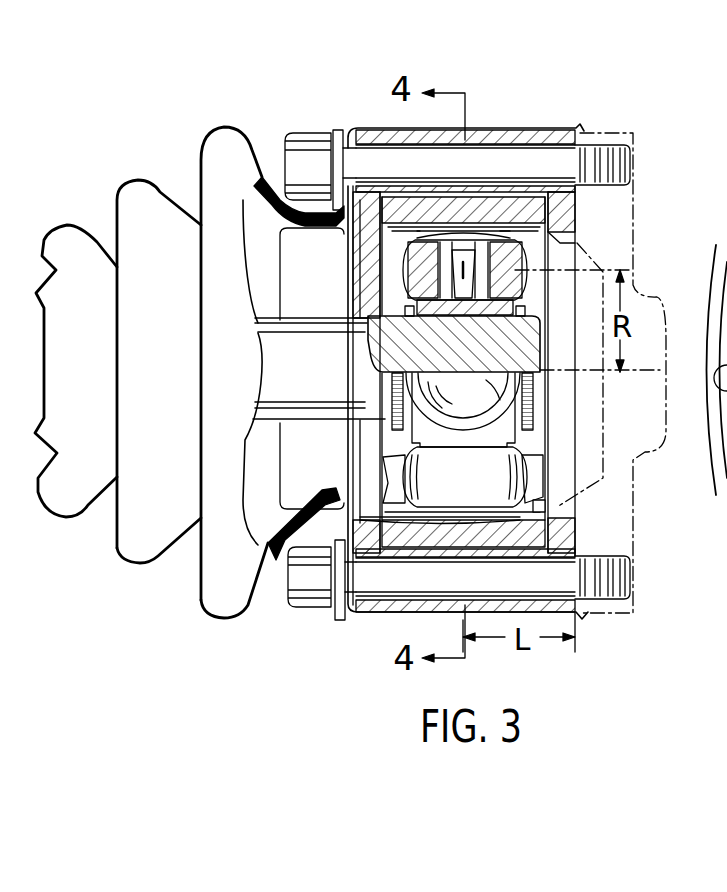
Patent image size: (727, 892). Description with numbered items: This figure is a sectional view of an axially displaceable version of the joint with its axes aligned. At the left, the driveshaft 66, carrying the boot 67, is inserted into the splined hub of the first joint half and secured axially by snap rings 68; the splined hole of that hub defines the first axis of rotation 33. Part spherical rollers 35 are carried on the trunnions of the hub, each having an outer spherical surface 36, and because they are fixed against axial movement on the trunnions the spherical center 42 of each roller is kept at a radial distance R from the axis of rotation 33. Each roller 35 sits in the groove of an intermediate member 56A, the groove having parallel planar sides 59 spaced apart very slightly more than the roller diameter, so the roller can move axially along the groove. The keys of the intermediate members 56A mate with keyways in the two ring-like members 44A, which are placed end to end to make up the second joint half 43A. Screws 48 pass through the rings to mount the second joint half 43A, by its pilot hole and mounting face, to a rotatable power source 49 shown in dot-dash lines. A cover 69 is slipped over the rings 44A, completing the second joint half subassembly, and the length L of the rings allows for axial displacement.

The driveshaft 66 is at (270, 318).
The boot 67 is at (232, 127).
The screws 48 is at (300, 133).
The cover 69 is at (372, 128).
The second joint half 43A is at (625, 70).
The ring-like members 44A is at (540, 128).
The rotatable power source 49 is at (635, 133).
The intermediate member 56A is at (530, 212).
The spherical center 42 is at (430, 262).
The snap rings 68 is at (408, 316).
The first axis of rotation 33 is at (638, 365).
The outer spherical surface 36 is at (530, 461).
The part spherical rollers 35 is at (503, 475).
The planar sides 59 is at (533, 503).